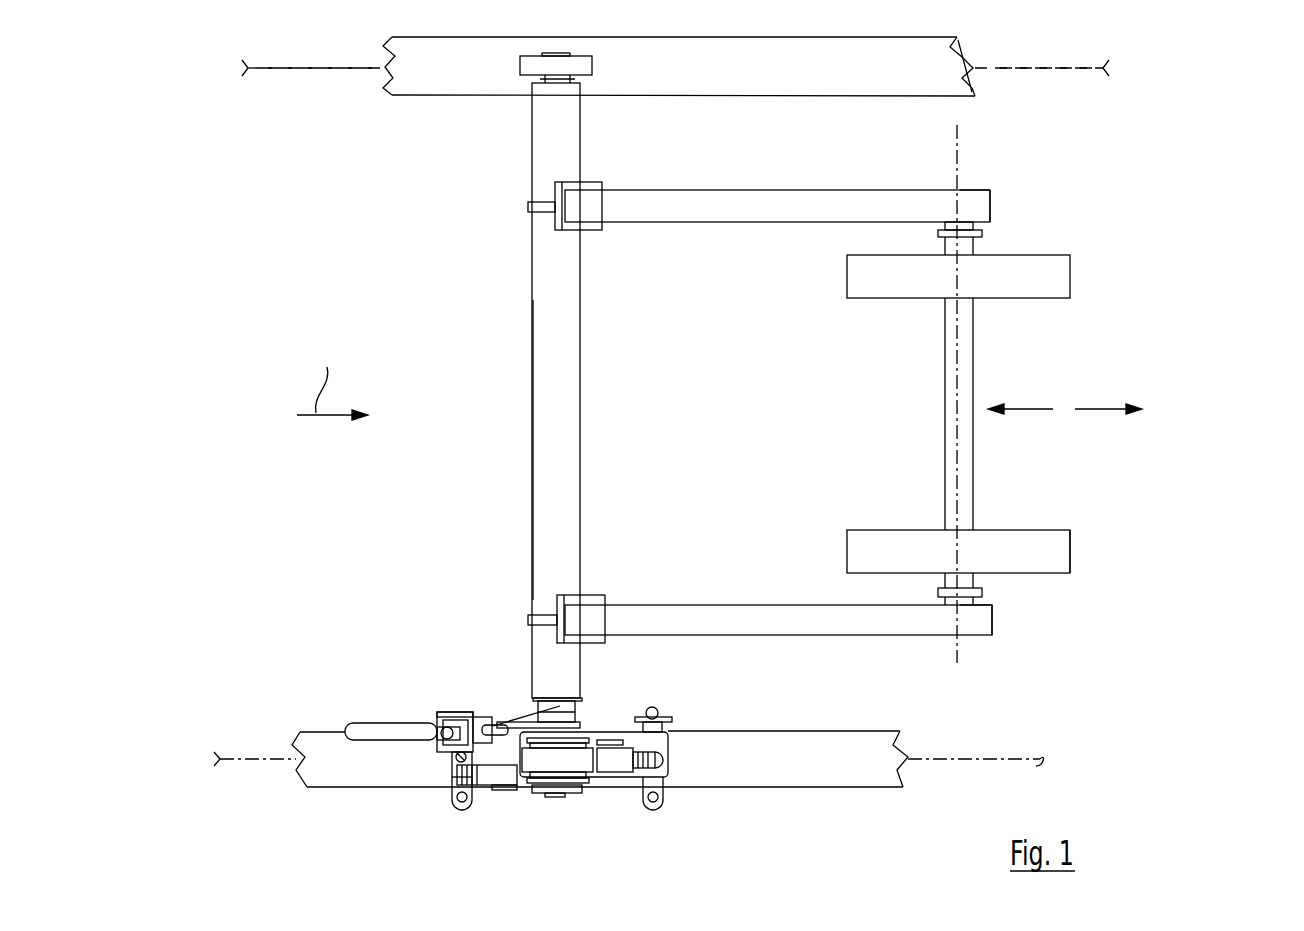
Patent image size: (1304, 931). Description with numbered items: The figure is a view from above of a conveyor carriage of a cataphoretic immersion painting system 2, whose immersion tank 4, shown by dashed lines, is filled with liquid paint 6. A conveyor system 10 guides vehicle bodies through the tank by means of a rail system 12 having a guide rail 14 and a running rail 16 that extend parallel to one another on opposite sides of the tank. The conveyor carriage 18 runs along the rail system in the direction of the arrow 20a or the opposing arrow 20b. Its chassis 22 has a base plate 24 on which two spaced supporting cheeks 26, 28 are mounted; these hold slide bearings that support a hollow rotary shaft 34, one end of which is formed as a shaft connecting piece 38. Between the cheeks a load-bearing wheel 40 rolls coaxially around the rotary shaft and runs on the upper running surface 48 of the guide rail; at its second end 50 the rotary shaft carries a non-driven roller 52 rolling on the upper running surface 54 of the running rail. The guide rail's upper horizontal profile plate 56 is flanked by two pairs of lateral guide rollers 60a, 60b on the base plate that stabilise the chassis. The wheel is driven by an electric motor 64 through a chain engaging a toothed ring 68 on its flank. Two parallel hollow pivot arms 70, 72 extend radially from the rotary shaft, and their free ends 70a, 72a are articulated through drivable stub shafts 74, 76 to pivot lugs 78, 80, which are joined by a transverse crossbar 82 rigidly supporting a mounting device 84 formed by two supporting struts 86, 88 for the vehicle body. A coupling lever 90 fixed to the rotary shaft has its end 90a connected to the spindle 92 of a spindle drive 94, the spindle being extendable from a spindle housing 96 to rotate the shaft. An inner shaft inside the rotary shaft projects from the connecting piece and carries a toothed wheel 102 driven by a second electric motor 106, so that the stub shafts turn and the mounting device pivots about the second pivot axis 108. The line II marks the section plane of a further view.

The cataphoretic immersion painting system 2 is at (1200, 142).
The immersion tank 4 is at (1073, 72).
The liquid paint 6 is at (347, 163).
The conveyor system 10 is at (1170, 285).
The rail system 12 is at (968, 727).
The guide rail 14 is at (868, 790).
The running rail 16 is at (762, 97).
The conveyor carriage 18 is at (476, 483).
The arrow 20a is at (1108, 408).
The opposing arrow 20b is at (1015, 412).
The chassis 22 is at (621, 710).
The base plate 24 is at (657, 742).
The supporting cheek 26 is at (590, 714).
The supporting cheek 28 is at (595, 795).
The rotary shaft 34 is at (520, 553).
The shaft connecting piece 38 is at (502, 723).
The load-bearing wheel 40 is at (560, 790).
The upper running surface 48 is at (872, 755).
The second end 50 is at (530, 81).
The non-driven roller 52 is at (575, 68).
The upper running surface 54 is at (935, 63).
The upper horizontal profile plate 56 is at (910, 772).
The lateral guide roller 60a is at (658, 710).
The lateral guide roller 60b is at (665, 800).
The electric motor 64 is at (668, 752).
The toothed ring 68 is at (497, 772).
The pivot arm 70 is at (742, 202).
The free end 70a is at (970, 207).
The pivot arm 72 is at (690, 622).
The free end 72a is at (975, 618).
The drivable stub shaft 74 is at (978, 233).
The drivable stub shaft 76 is at (985, 593).
The pivot lug 78 is at (940, 233).
The pivot lug 80 is at (940, 594).
The transverse crossbar 82 is at (958, 500).
The mounting device 84 is at (1085, 542).
The supporting strut 86 is at (877, 280).
The supporting strut 88 is at (868, 545).
The coupling lever 90 is at (538, 710).
The end of coupling lever 90a is at (468, 713).
The spindle 92 is at (445, 767).
The spindle drive 94 is at (426, 743).
The spindle housing 96 is at (357, 730).
The toothed wheel 102 is at (545, 798).
The electric motor 106 is at (493, 785).
The second pivot axis 108 is at (958, 173).
The section line II is at (332, 378).